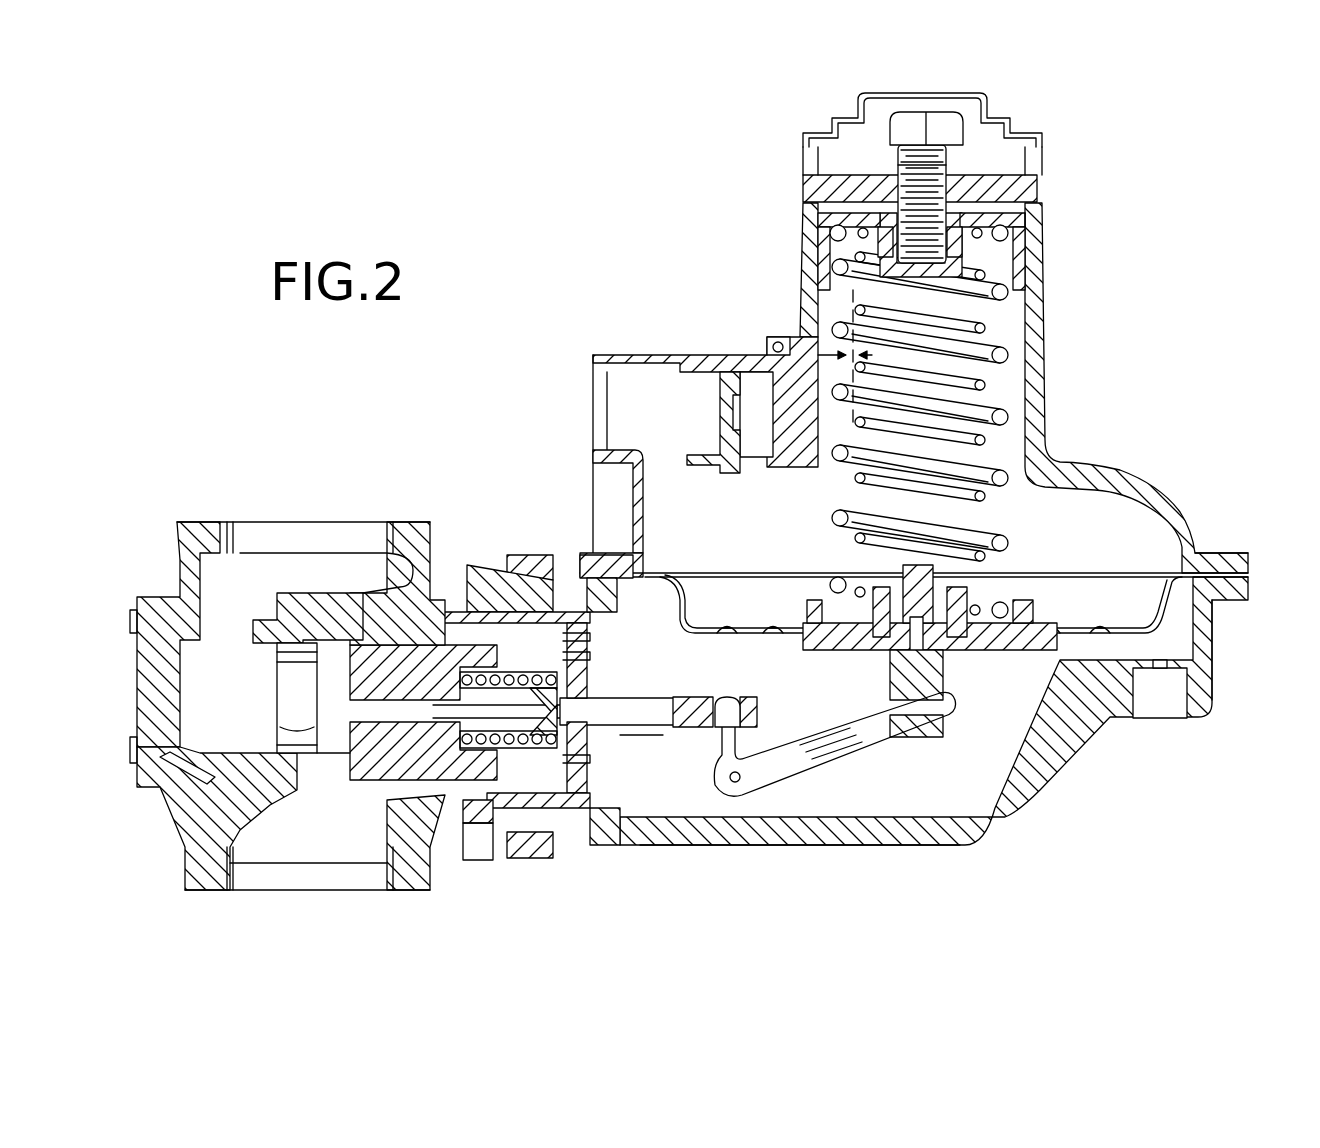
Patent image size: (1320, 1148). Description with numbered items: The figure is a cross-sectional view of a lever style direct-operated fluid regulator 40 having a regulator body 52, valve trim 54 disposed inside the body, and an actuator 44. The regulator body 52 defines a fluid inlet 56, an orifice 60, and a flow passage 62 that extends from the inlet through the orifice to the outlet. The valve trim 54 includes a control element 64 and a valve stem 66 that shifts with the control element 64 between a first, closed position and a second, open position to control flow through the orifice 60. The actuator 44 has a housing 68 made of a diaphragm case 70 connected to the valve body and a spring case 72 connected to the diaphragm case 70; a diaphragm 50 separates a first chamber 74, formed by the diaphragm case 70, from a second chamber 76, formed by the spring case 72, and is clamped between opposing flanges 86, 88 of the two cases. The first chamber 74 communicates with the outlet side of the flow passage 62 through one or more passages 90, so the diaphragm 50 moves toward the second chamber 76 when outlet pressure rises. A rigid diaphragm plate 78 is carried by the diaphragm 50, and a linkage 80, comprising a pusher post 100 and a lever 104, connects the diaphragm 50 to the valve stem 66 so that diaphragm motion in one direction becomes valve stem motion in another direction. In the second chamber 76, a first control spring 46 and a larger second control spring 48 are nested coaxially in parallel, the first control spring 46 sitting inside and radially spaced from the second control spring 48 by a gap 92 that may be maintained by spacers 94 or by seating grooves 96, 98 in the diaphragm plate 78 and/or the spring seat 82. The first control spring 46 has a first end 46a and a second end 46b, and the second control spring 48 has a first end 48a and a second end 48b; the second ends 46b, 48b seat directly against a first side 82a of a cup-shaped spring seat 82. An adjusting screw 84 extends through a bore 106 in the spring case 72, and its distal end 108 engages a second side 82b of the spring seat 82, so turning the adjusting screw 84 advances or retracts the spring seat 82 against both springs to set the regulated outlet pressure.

The fluid regulator 40 is at (1137, 201).
The actuator 44 is at (572, 495).
The first control spring 46 is at (1008, 372).
The first end of first control spring 46a is at (1010, 650).
The second end of first control spring 46b is at (845, 212).
The second control spring 48 is at (1010, 415).
The first end of second control spring 48a is at (1137, 697).
The second end of second control spring 48b is at (835, 225).
The diaphragm 50 is at (1203, 663).
The regulator body 52 is at (190, 800).
The valve trim 54 is at (317, 935).
The fluid inlet 56 is at (277, 525).
The orifice 60 is at (313, 720).
The flow passage 62 is at (240, 692).
The control element 64 is at (383, 752).
The valve stem 66 is at (470, 707).
The housing 68 is at (968, 850).
The diaphragm case 70 is at (1060, 772).
The spring case 72 is at (1125, 457).
The first chamber 74 is at (680, 680).
The second chamber 76 is at (715, 527).
The diaphragm plate 78 is at (1010, 600).
The linkage 80 is at (833, 795).
The spring seat 82 is at (960, 252).
The first side of spring seat 82a is at (1045, 238).
The second side of spring seat 82b is at (900, 170).
The adjusting screw 84 is at (965, 142).
The flange of diaphragm case 86 is at (1250, 578).
The flange of spring case 88 is at (1248, 552).
The passage 90 is at (477, 645).
The gap 92 is at (845, 345).
The spacer 94 is at (830, 245).
The seating groove 96 is at (875, 607).
The seating groove 98 is at (830, 623).
The pusher post 100 is at (940, 677).
The lever 104 is at (760, 780).
The bore 106 is at (840, 188).
The distal end of adjusting screw 108 is at (932, 243).